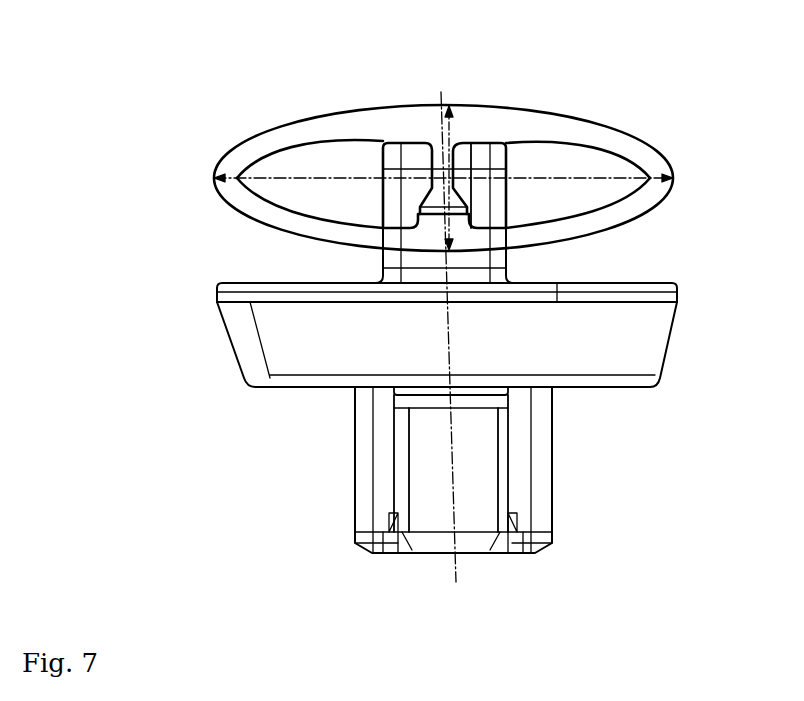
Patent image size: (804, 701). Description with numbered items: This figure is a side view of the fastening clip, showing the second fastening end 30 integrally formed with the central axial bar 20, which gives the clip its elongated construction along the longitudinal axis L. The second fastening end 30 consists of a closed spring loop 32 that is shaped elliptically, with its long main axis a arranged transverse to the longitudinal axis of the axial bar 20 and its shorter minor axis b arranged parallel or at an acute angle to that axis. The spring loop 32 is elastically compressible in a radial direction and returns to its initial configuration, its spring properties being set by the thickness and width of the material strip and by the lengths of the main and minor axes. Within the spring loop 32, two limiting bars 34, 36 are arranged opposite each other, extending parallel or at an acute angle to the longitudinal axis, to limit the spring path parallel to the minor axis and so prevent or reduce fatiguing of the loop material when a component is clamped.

The second fastening end 30 is at (449, 297).
The spring loop 32 is at (585, 120).
The limiting bar 34 is at (478, 222).
The limiting bar 36 is at (435, 143).
The axial bar 20 is at (398, 261).